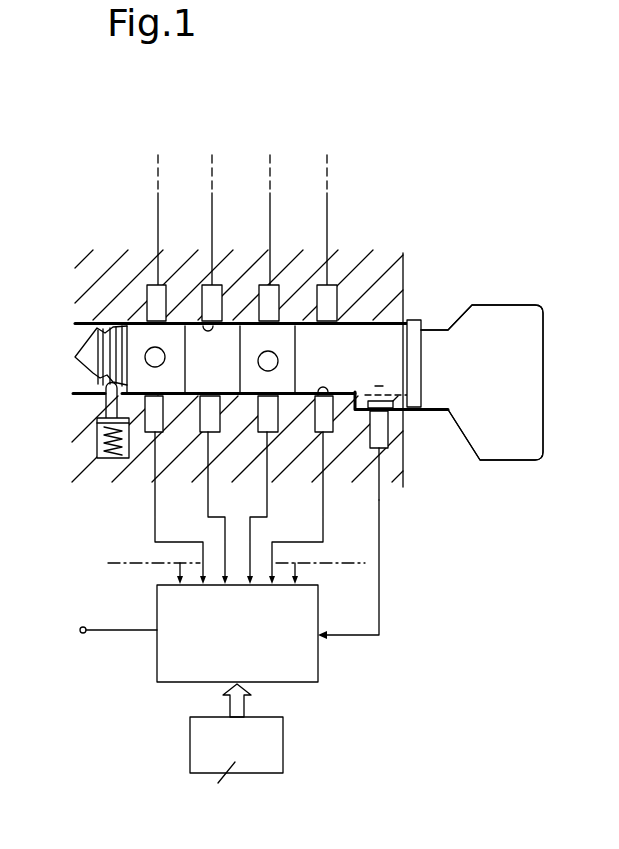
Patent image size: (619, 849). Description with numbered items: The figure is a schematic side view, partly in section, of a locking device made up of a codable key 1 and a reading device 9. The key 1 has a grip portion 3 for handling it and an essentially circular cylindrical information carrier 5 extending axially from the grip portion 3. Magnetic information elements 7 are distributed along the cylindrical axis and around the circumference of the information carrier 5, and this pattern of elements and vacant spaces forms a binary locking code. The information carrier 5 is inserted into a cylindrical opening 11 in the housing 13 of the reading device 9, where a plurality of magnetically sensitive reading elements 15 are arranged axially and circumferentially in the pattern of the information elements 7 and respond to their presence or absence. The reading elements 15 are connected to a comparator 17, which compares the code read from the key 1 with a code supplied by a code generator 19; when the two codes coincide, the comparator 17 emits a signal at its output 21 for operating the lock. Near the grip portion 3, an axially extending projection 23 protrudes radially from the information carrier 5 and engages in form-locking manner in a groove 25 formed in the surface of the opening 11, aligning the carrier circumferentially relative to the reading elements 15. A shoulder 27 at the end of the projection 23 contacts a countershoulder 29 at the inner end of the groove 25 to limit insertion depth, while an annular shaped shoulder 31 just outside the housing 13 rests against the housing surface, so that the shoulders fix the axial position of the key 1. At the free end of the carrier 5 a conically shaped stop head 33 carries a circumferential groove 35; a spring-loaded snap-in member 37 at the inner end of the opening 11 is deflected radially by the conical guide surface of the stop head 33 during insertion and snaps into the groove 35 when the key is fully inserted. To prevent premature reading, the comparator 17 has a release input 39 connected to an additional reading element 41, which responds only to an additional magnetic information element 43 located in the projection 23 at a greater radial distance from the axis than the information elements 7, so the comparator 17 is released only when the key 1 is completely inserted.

The key 1 is at (516, 294).
The grip portion 3 is at (530, 377).
The information carrier 5 is at (368, 333).
The magnetic information elements 7 is at (149, 348).
The reading device 9 is at (80, 498).
The cylindrical opening 11 is at (75, 322).
The housing 13 is at (376, 278).
The reading elements 15 is at (209, 297).
The comparator 17 is at (318, 677).
The code generator 19 is at (283, 752).
The output 21 is at (83, 634).
The projection 23 is at (400, 402).
The groove 25 is at (398, 412).
The shoulder 27 is at (365, 393).
The countershoulder 29 is at (346, 400).
The annular shaped shoulder 31 is at (418, 320).
The stop head 33 is at (75, 357).
The groove 35 is at (100, 377).
The snap-in member 37 is at (106, 406).
The release input 39 is at (348, 637).
The additional reading element 41 is at (382, 446).
The additional magnetic information element 43 is at (383, 385).